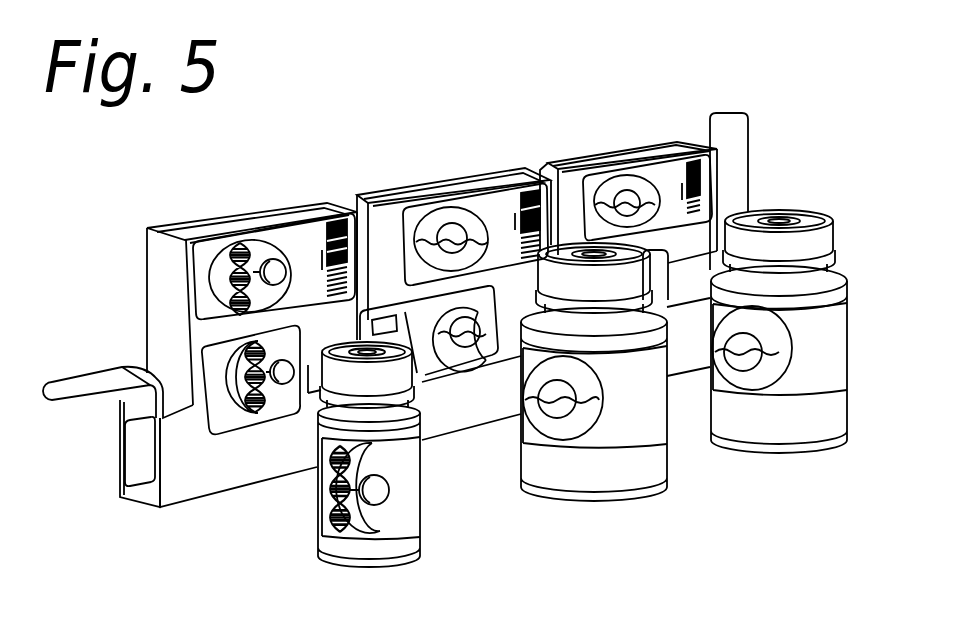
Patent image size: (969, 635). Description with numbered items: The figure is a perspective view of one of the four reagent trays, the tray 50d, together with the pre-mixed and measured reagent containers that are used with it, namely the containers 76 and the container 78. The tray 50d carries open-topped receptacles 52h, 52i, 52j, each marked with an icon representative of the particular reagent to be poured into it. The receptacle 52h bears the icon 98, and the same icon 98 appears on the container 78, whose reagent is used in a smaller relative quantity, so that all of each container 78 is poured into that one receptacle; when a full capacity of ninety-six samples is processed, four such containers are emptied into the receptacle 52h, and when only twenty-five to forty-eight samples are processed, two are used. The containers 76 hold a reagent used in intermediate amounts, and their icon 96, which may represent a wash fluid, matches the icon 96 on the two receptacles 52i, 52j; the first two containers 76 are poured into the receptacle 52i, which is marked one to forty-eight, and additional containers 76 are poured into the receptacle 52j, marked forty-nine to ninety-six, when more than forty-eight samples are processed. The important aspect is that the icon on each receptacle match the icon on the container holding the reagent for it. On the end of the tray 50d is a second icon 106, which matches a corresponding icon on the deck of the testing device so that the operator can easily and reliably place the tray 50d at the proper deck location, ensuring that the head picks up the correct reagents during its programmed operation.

The tray 50d is at (197, 482).
The receptacle 52h is at (220, 212).
The receptacle 52i is at (408, 193).
The receptacle 52j is at (597, 162).
The container 76 is at (585, 484).
The container 78 is at (348, 549).
The icon 96 is at (493, 208).
The icon 98 is at (310, 243).
The icon 106 is at (130, 462).